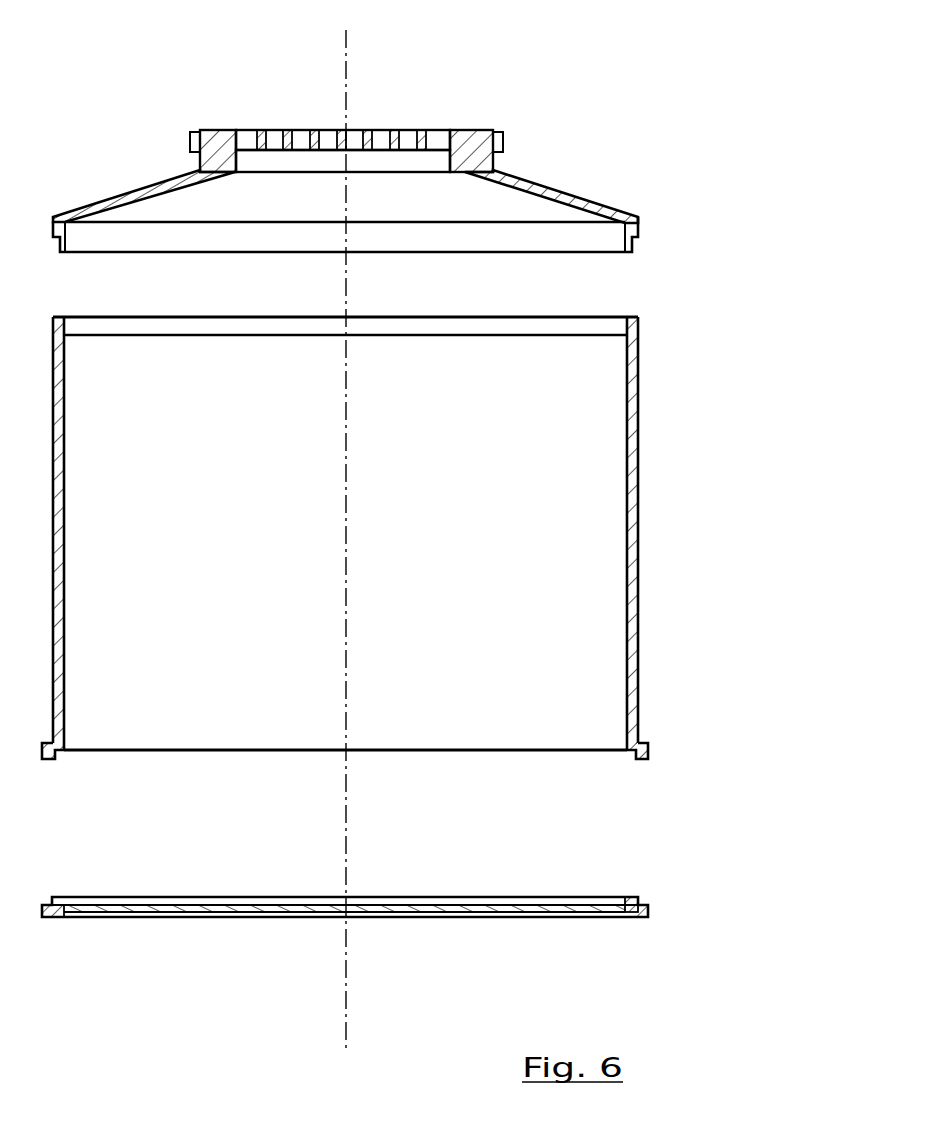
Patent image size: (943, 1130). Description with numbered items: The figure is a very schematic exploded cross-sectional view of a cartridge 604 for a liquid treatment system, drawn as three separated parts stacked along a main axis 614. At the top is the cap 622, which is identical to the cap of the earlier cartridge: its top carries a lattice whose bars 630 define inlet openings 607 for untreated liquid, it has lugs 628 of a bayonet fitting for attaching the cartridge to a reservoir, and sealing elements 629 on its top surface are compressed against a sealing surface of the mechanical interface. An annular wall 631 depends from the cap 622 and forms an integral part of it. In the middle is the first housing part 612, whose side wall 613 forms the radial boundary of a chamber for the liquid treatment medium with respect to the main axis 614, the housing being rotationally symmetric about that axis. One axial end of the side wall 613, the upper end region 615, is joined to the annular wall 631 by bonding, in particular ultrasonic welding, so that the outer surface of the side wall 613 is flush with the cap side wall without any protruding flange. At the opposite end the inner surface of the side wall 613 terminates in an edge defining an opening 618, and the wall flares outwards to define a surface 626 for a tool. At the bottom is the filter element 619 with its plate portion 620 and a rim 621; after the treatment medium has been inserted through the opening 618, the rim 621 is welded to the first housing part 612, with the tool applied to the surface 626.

The cartridge 604 is at (552, 68).
The filter / lattice 607 is at (390, 130).
The first housing part 612 is at (510, 302).
The side wall 613 is at (636, 650).
The main axis 614 is at (345, 47).
The upper rim 615 is at (255, 314).
The opening 618 is at (398, 744).
The filter element 619 is at (396, 842).
The plate 620 is at (270, 906).
The rim 621 is at (630, 897).
The cap 622 is at (592, 140).
The surface for a tool 626 is at (645, 737).
The right collar block 628 is at (502, 131).
The left collar block 629 is at (228, 126).
The lattice opening 630 is at (372, 130).
The annular wall 631 is at (637, 243).